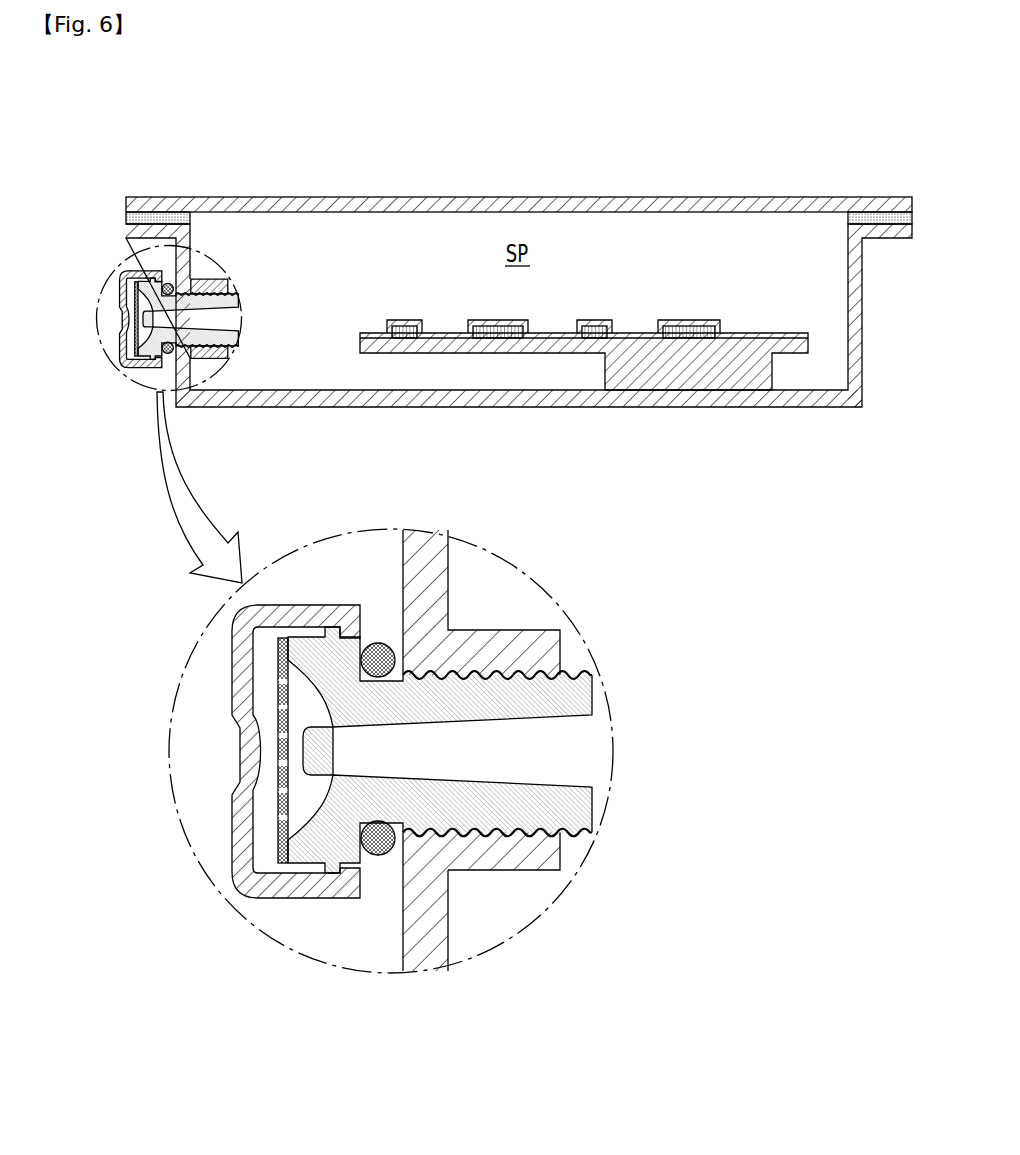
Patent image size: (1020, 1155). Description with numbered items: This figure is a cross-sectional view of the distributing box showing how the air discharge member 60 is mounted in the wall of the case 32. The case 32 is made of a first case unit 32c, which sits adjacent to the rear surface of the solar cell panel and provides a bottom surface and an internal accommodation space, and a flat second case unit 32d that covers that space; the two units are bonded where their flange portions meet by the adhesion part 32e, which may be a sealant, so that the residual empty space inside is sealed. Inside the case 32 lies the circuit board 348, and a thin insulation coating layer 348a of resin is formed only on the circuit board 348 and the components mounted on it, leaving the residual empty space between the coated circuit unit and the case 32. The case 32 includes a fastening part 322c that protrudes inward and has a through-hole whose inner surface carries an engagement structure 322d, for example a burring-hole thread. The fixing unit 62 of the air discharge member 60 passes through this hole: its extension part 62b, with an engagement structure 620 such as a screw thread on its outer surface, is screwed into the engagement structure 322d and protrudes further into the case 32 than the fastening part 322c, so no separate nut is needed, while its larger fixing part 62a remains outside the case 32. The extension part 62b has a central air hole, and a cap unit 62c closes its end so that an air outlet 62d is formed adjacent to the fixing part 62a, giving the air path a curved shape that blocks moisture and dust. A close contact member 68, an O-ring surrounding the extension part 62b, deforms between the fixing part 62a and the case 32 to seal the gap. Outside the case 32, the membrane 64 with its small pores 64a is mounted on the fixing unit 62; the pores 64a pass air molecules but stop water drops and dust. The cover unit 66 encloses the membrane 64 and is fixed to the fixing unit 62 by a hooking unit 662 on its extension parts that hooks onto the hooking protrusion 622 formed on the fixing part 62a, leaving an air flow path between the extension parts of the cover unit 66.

The case 32 is at (519, 251).
The first case unit 32c is at (848, 268).
The second case unit 32d is at (745, 198).
The adhesion part 32e is at (877, 216).
The air discharge member 60 is at (112, 318).
The fixing unit 62 is at (342, 757).
The fixing part 62a is at (338, 805).
The extension part 62b is at (440, 703).
The cap unit 62c is at (312, 757).
The air outlet 62d is at (328, 782).
The hooking protrusion 622 is at (303, 627).
The membrane 64 is at (190, 839).
The pores 64a is at (283, 680).
The cover unit 66 is at (313, 752).
The hooking unit 662 is at (368, 633).
The close contact member 68 is at (380, 858).
The engagement structure 620 is at (549, 772).
The fastening part 322c is at (505, 860).
The engagement structure 322d is at (556, 834).
The circuit board 348 is at (584, 395).
The insulation coating layer 348a is at (740, 345).